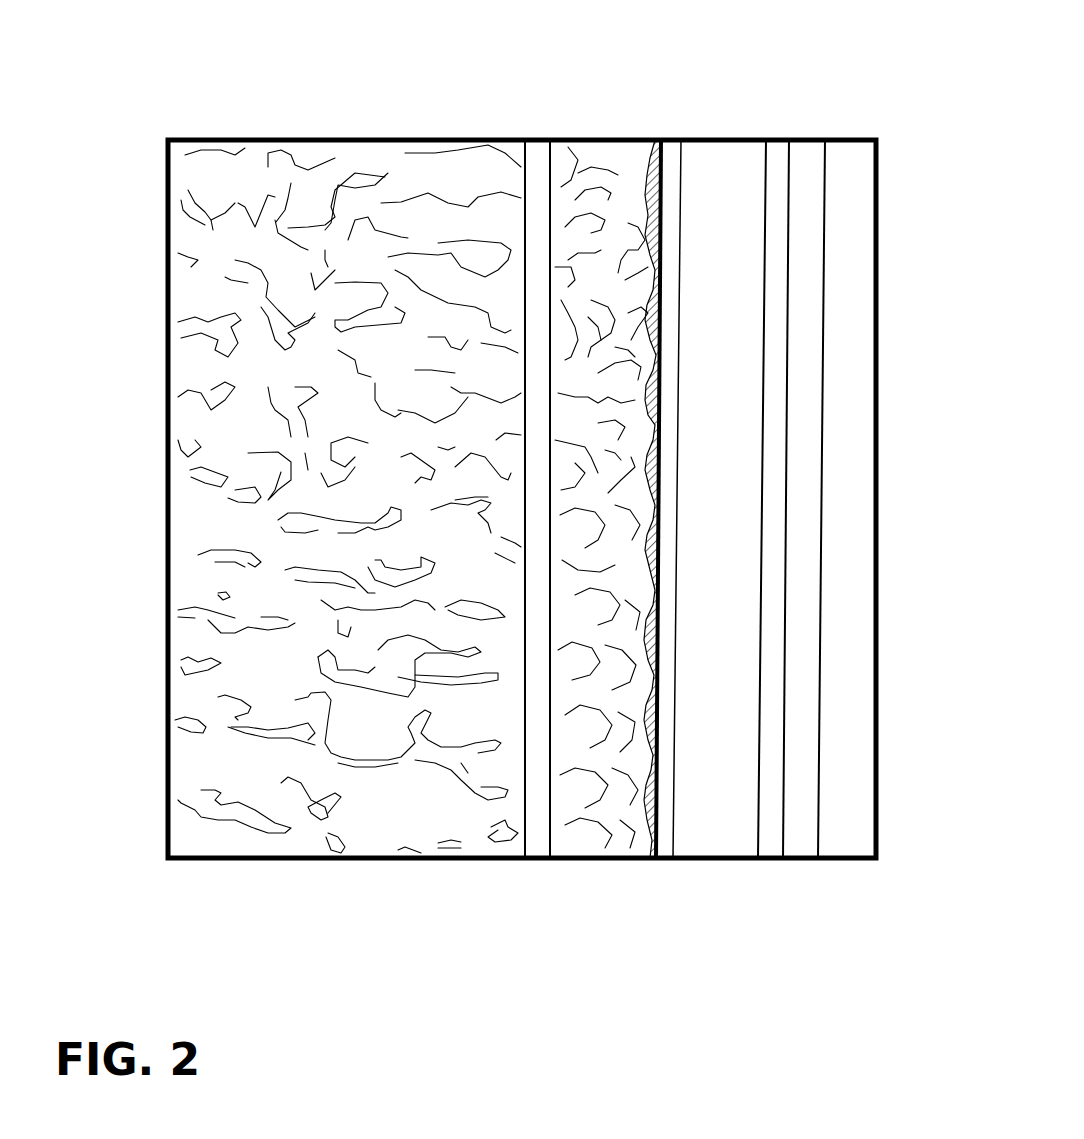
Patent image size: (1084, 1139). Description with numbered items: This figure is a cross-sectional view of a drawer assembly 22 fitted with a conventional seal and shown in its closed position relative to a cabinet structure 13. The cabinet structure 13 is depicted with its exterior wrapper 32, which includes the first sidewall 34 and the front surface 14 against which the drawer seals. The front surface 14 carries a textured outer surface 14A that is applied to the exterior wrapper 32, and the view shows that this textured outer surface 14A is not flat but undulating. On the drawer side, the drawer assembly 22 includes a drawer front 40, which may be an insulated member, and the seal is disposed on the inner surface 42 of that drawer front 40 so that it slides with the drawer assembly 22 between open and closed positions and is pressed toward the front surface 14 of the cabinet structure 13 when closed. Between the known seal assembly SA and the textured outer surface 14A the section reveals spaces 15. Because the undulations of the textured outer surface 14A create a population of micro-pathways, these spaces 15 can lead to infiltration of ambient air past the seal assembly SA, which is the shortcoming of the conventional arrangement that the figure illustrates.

The cabinet structure 13 is at (98, 163).
The exterior wrapper 32 is at (154, 286).
The first sidewall 34 is at (363, 265).
The front surface 14 is at (622, 222).
The textured outer surface 14A is at (662, 248).
The spaces 15 is at (660, 432).
The drawer assembly 22 is at (838, 878).
The inner surface 42 is at (822, 432).
The drawer front 40 is at (845, 522).
The seal assembly SA is at (712, 828).